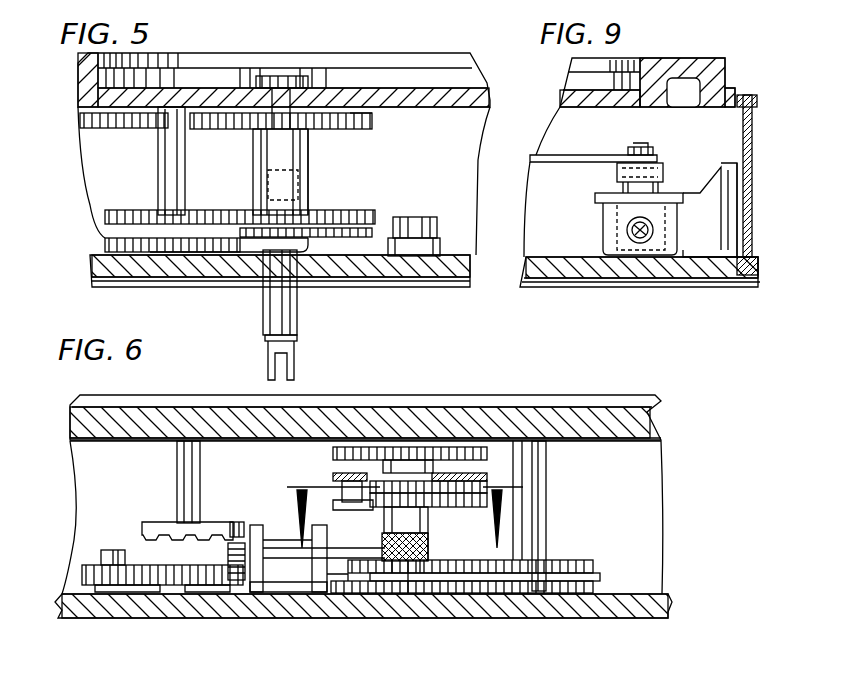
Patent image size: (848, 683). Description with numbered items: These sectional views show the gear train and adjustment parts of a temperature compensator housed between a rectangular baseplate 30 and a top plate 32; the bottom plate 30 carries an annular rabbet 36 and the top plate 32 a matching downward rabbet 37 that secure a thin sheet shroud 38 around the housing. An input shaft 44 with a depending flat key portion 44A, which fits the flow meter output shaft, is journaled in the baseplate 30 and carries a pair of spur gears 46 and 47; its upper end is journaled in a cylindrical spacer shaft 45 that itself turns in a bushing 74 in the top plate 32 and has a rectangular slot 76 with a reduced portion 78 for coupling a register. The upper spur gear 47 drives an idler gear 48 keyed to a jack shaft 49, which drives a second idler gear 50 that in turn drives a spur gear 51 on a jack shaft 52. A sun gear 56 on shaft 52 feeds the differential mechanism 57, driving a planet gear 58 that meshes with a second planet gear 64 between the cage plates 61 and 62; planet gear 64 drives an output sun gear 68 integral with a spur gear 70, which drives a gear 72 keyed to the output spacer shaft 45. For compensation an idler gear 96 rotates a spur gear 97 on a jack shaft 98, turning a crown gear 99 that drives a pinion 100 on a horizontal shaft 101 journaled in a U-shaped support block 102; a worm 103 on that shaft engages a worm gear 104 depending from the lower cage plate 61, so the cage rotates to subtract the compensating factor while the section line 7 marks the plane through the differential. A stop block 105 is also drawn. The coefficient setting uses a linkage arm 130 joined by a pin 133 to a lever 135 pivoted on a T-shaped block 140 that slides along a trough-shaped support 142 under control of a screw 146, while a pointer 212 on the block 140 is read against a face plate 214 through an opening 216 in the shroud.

In FIG. 6, the section line 7- 7 is at (404, 517).
In FIG. 5, the baseplate 30 is at (398, 272).
In FIG. 9, the baseplate 30 is at (566, 268).
In FIG. 6, the baseplate 30 is at (542, 606).
In FIG. 5, the top plate 32 is at (82, 74).
In FIG. 9, the top plate 32 is at (626, 100).
In FIG. 6, the top plate 32 is at (226, 383).
In FIG. 9, the rabbet 36 is at (758, 270).
In FIG. 9, the rabbet 37 is at (757, 100).
In FIG. 9, the shroud 38 is at (752, 142).
In FIG. 5, the input shaft 44 is at (266, 312).
In FIG. 5, the flat key portion 44A is at (297, 358).
In FIG. 5, the spacer shaft 45 is at (290, 160).
In FIG. 5, the spur gear 46 is at (332, 240).
In FIG. 5, the spur gear 47 is at (335, 232).
In FIG. 6, the spur gear 47 is at (368, 583).
In FIG. 5, the idler gear 48 is at (105, 215).
In FIG. 6, the idler gear 48 is at (580, 560).
In FIG. 5, the jack shaft 49 is at (166, 160).
In FIG. 6, the jack shaft 49 is at (548, 462).
In FIG. 5, the idler gear 50 is at (105, 247).
In FIG. 6, the idler gear 50 is at (590, 594).
In FIG. 6, the spur gear 51 is at (334, 596).
In FIG. 6, the jack shaft 52 is at (412, 596).
In FIG. 6, the sun gear 56 is at (432, 536).
In FIG. 6, the differential mechanism 57 is at (490, 472).
In FIG. 6, the planet gear 58 is at (422, 514).
In FIG. 6, the cage plate 61 is at (342, 508).
In FIG. 6, the cage plate 62 is at (336, 475).
In FIG. 6, the planet gear 64 is at (458, 474).
In FIG. 6, the output sun gear 68 is at (402, 462).
In FIG. 5, the spur gear 70 is at (108, 128).
In FIG. 6, the spur gear 70 is at (350, 449).
In FIG. 5, the gear 72 is at (350, 118).
In FIG. 5, the bushing 74 is at (262, 112).
In FIG. 5, the rectangular slot 76 is at (270, 66).
In FIG. 5, the reduced portion 78 is at (296, 66).
In FIG. 6, the idler gear 96 is at (82, 570).
In FIG. 6, the spur gear 97 is at (226, 594).
In FIG. 6, the jack shaft 98 is at (180, 452).
In FIG. 6, the crown gear 99 is at (156, 523).
In FIG. 6, the pinion 100 is at (232, 524).
In FIG. 6, the horizontally disposed shaft 101 is at (268, 540).
In FIG. 6, the U-shaped support block 102 is at (278, 596).
In FIG. 6, the worm 103 is at (424, 580).
In FIG. 6, the worm gear 104 is at (393, 580).
In FIG. 5, the stop block 105 is at (425, 222).
In FIG. 9, the linkage arm 130 is at (570, 153).
In FIG. 9, the pin 133 is at (636, 146).
In FIG. 9, the lever 135 is at (617, 176).
In FIG. 9, the T-shaped block 140 is at (612, 226).
In FIG. 9, the trough-shaped support 142 is at (604, 218).
In FIG. 9, the screw 146 is at (640, 243).
In FIG. 9, the pointer 212 is at (733, 182).
In FIG. 9, the face plate 214 is at (738, 208).
In FIG. 9, the opening 216 is at (752, 235).